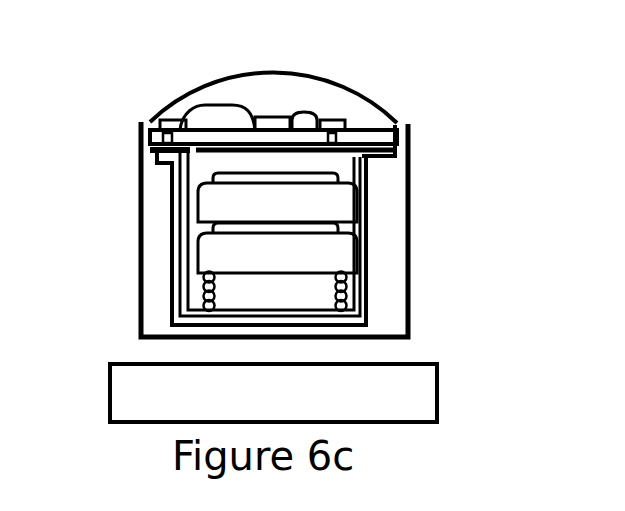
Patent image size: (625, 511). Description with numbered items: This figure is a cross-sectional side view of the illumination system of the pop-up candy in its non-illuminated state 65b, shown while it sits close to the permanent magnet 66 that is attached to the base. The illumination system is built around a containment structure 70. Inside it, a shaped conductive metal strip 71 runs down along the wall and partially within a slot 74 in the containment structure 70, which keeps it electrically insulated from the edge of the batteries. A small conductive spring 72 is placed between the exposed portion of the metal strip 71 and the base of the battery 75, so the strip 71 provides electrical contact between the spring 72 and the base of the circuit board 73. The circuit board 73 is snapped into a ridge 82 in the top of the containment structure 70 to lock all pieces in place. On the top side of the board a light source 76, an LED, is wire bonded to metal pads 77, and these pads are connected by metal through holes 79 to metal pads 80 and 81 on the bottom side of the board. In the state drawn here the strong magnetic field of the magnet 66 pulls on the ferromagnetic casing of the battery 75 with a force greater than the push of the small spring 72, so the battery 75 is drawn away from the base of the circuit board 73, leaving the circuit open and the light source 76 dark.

The non-illuminated state 65b is at (371, 99).
The permanent magnet 66 is at (294, 412).
The containment structure 70 is at (411, 277).
The shaped conductive metal strip 71 is at (173, 256).
The small conductive spring 72 is at (347, 300).
The circuit board 73 is at (150, 134).
The slot 74 is at (185, 304).
The battery 75 is at (294, 219).
The light source 76 is at (257, 113).
The metal pads 77 is at (160, 121).
The metal through holes 79 is at (139, 140).
The metal pad 80 is at (158, 158).
The metal pad 81 is at (347, 156).
The ridge 82 is at (398, 143).